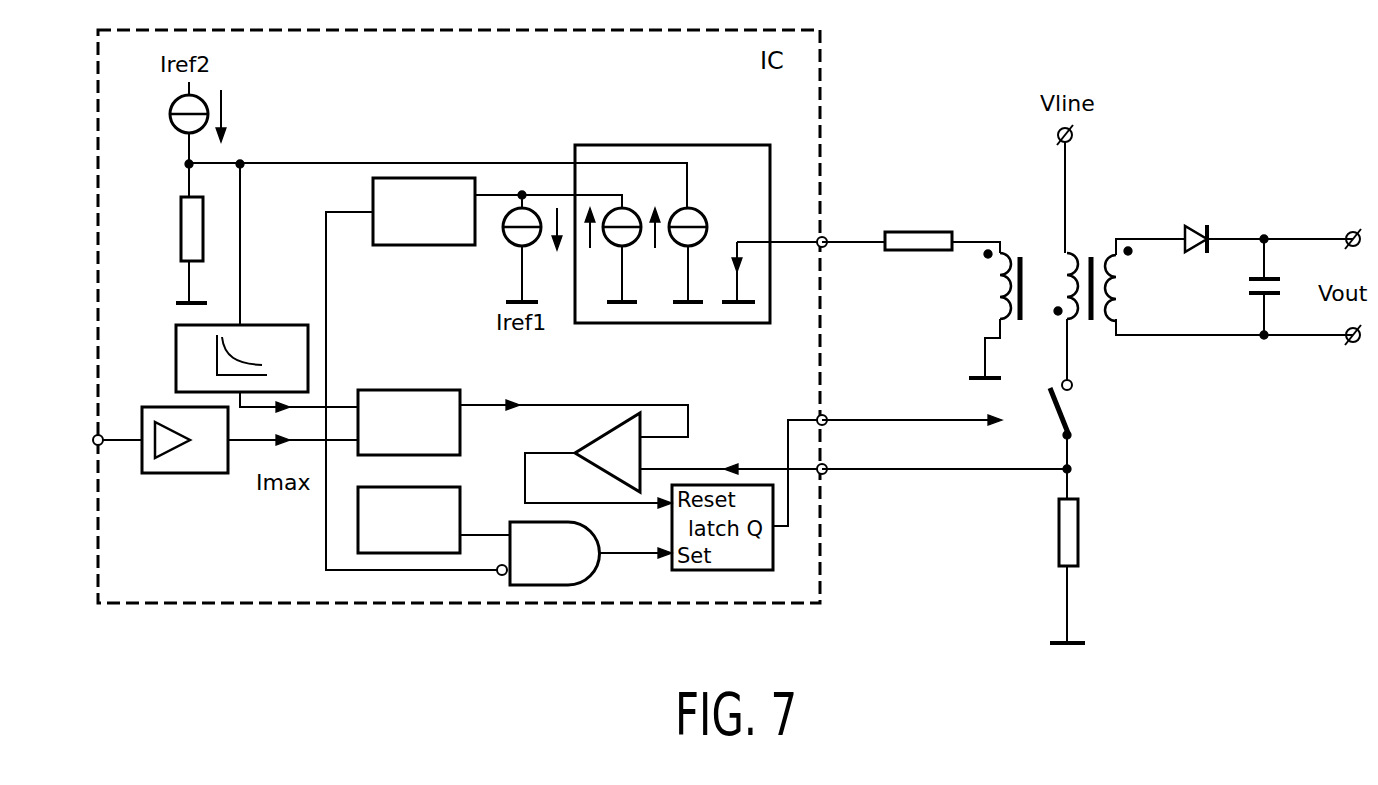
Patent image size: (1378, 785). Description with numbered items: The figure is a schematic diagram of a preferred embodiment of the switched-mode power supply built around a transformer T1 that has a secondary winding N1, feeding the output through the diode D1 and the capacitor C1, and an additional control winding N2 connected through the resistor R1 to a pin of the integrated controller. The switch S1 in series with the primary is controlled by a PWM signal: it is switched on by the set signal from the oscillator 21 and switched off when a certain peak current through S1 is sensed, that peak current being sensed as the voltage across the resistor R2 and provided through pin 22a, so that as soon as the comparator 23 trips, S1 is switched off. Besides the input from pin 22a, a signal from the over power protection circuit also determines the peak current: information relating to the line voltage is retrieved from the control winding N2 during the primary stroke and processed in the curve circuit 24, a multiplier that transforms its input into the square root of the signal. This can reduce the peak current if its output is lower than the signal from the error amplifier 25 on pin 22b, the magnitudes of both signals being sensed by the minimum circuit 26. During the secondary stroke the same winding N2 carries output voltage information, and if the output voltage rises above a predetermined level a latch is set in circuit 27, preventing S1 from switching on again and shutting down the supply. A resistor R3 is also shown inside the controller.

The oscillator 21 is at (462, 494).
The pin 22a is at (828, 475).
The pin 22b is at (95, 440).
The comparator 23 is at (590, 470).
The curve circuit 24 is at (176, 352).
The error amplifier 25 is at (212, 474).
The minimum circuit 26 is at (398, 390).
The latch circuit 27 is at (416, 246).
The resistor R1 is at (911, 259).
The resistor R2 is at (1082, 571).
The resistor R3 is at (175, 233).
The capacitor C1 is at (1243, 287).
The diode D1 is at (1200, 219).
The transformer T1 is at (1051, 284).
The secondary winding N1 is at (1119, 255).
The control winding N2 is at (1005, 258).
The switch S1 is at (1078, 409).